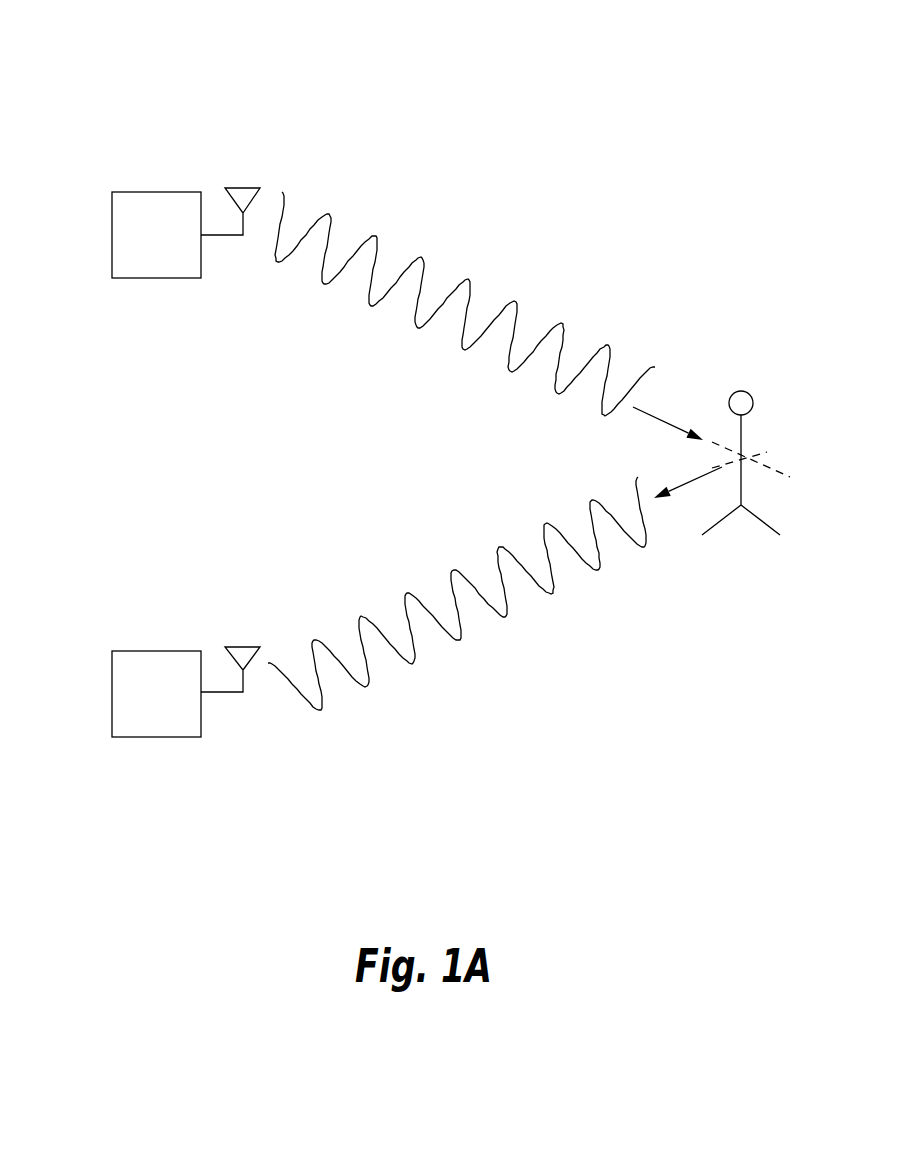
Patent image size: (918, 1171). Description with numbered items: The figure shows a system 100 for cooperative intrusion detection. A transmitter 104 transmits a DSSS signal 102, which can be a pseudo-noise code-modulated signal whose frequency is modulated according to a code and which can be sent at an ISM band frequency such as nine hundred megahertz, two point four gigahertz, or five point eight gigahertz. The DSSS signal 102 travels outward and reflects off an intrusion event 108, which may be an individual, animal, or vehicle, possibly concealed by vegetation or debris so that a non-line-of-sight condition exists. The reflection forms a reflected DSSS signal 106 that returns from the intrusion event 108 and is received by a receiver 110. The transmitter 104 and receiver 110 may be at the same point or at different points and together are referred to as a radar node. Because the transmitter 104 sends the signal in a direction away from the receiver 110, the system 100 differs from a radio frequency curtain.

The system 100 is at (166, 50).
The DSSS signal 102 is at (467, 279).
The transmitter 104 is at (112, 222).
The reflected DSSS signal 106 is at (502, 618).
The intrusion event 108 is at (753, 403).
The receiver 110 is at (112, 680).